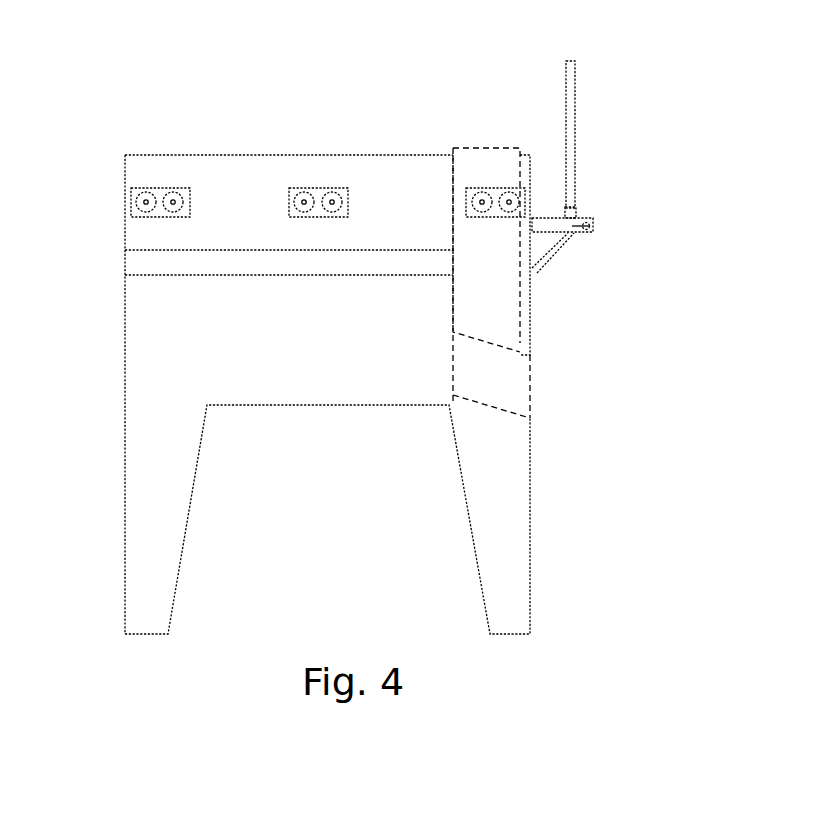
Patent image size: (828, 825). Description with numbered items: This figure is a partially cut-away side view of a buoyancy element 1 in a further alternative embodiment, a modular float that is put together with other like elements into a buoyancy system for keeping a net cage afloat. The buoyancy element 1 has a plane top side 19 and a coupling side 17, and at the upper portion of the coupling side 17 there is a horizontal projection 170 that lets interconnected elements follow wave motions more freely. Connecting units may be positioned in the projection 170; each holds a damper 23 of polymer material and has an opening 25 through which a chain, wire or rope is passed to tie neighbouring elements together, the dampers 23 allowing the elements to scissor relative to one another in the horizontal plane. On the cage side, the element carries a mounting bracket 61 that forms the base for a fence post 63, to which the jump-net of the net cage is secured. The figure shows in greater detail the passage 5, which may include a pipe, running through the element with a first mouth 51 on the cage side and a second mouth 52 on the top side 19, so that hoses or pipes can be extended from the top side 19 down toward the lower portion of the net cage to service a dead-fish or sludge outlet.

The buoyancy element 1 is at (243, 118).
The passage 5 is at (452, 158).
The coupling side 17 is at (174, 399).
The top side 19 is at (320, 153).
The damper 23 is at (170, 192).
The opening 25 is at (140, 200).
The first mouth 51 is at (523, 390).
The second mouth 52 is at (498, 152).
The mounting bracket 61 is at (587, 225).
The fence post 63 is at (575, 106).
The projection 170 is at (150, 226).